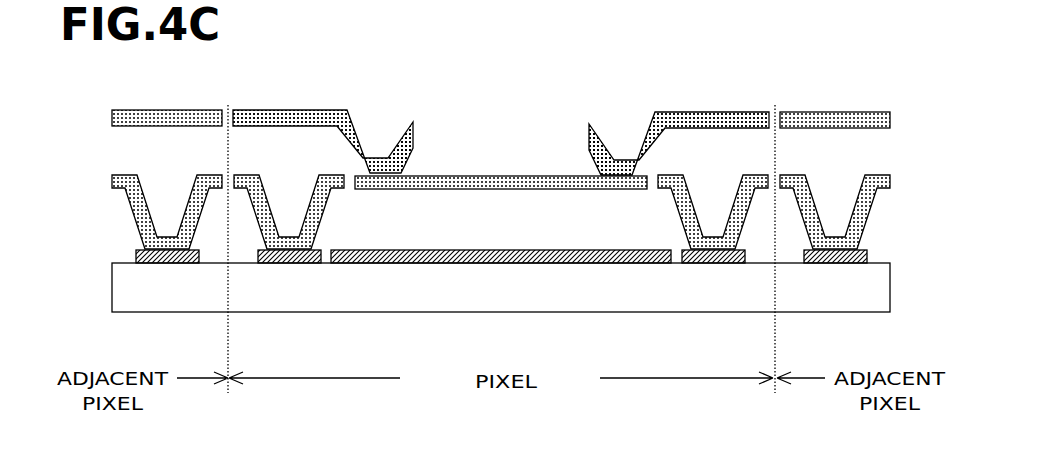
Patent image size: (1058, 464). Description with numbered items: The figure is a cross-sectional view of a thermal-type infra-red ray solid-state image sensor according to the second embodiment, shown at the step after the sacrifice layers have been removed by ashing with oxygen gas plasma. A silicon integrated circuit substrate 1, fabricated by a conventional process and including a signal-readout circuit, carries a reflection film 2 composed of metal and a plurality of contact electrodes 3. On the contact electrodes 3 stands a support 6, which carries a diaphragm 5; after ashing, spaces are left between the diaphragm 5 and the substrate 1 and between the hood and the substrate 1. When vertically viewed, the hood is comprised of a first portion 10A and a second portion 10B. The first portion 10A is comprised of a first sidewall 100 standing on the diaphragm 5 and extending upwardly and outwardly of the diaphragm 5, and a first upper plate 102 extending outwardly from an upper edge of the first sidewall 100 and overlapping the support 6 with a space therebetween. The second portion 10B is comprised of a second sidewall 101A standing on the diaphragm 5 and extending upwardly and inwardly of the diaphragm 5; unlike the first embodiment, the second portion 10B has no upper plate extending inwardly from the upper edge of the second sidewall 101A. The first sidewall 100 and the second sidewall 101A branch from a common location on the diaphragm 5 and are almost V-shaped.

The silicon integrated circuit substrate 1 is at (296, 290).
The reflection film 2 is at (527, 263).
The contact electrode 3 is at (702, 263).
The diaphragm 5 is at (530, 175).
The support 6 is at (267, 200).
The first portion 10A is at (302, 43).
The second portion 10B is at (501, 133).
The first sidewall 100 is at (364, 131).
The second sidewall 101A is at (394, 138).
The first upper plate 102 is at (323, 108).